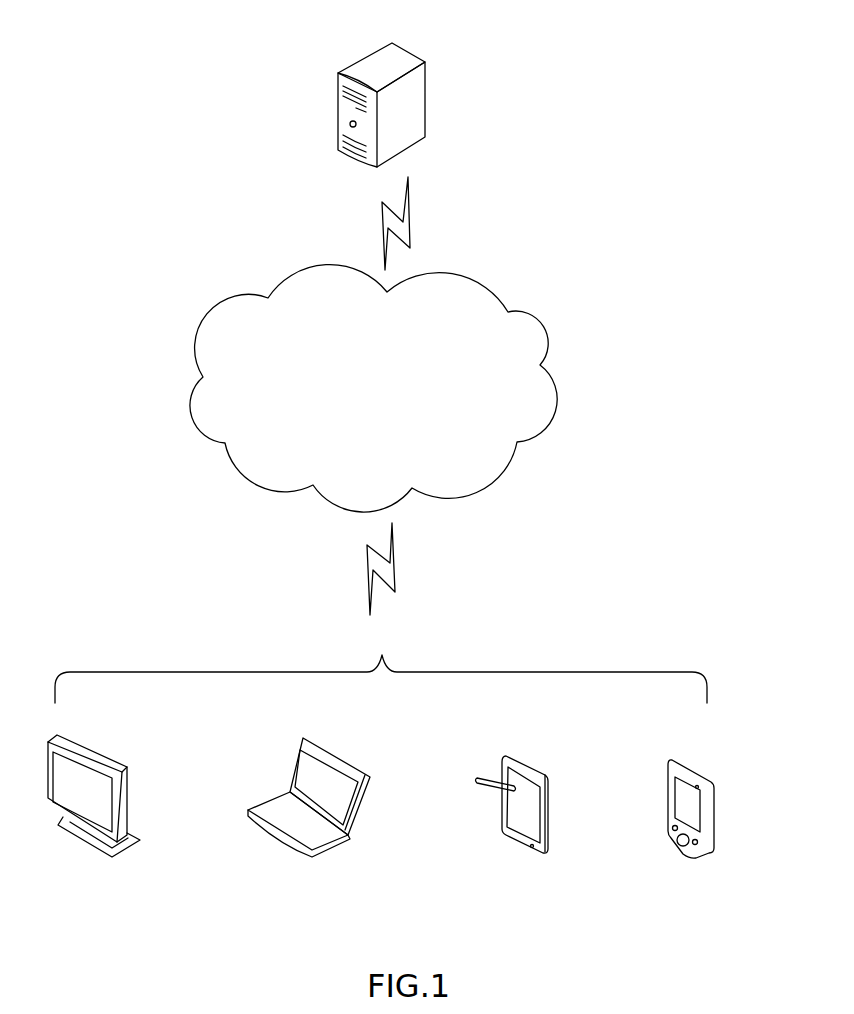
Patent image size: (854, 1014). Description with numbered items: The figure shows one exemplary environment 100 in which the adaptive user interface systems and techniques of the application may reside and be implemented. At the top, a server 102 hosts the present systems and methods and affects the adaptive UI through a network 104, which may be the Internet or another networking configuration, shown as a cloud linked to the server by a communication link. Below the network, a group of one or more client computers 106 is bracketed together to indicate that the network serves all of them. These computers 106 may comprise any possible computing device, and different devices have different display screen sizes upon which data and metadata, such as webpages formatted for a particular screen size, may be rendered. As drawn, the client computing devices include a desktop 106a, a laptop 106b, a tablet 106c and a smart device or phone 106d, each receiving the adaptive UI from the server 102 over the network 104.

The environment 100 is at (523, 172).
The server 102 is at (425, 62).
The network 104 is at (485, 278).
The client computers 106 is at (583, 672).
The desktop 106a is at (112, 757).
The laptop 106b is at (363, 772).
The tablet 106c is at (547, 770).
The smart device/phone 106d is at (705, 775).